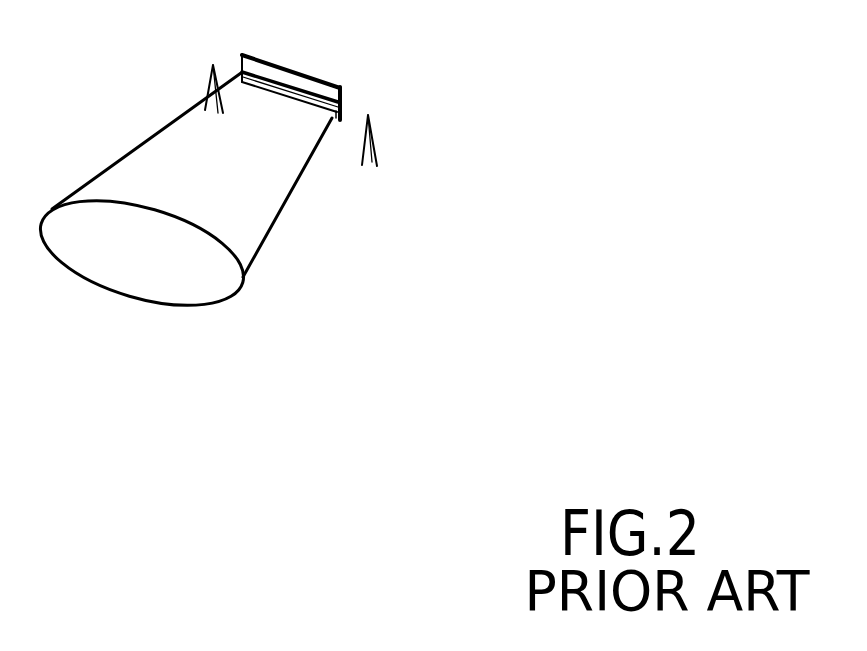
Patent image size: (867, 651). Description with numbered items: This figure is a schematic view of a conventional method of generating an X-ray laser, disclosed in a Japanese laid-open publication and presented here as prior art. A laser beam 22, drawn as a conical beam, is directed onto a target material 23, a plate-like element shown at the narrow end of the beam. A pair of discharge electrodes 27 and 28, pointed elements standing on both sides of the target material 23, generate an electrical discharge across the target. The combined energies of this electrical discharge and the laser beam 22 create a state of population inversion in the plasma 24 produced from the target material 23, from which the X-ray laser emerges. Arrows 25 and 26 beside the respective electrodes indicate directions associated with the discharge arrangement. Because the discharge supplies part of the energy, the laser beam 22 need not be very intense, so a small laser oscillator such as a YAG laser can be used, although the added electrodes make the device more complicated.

The laser beam 22 is at (247, 223).
The target material 23 is at (285, 72).
The plasma 24 is at (316, 90).
The direction arrow 25 is at (212, 63).
The direction arrow 26 is at (377, 122).
The discharge electrode 27 is at (208, 108).
The discharge electrode 28 is at (373, 160).